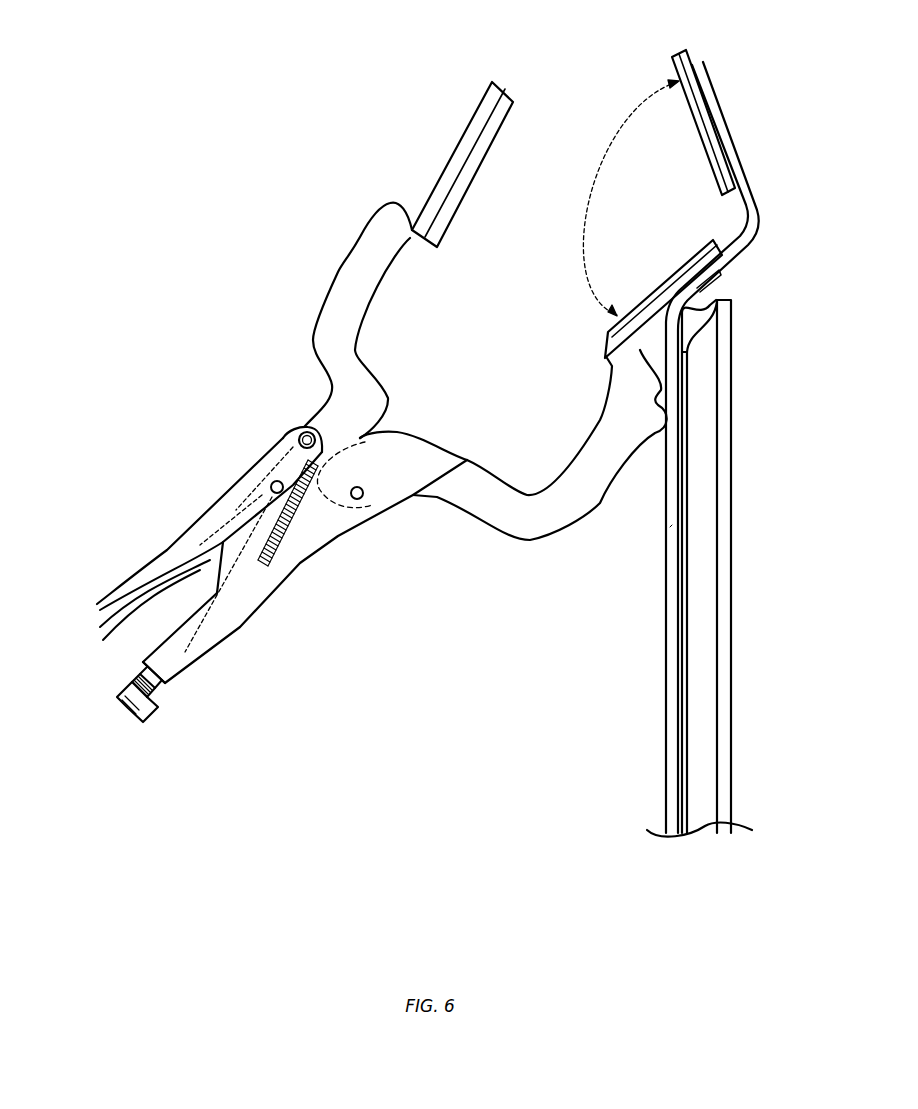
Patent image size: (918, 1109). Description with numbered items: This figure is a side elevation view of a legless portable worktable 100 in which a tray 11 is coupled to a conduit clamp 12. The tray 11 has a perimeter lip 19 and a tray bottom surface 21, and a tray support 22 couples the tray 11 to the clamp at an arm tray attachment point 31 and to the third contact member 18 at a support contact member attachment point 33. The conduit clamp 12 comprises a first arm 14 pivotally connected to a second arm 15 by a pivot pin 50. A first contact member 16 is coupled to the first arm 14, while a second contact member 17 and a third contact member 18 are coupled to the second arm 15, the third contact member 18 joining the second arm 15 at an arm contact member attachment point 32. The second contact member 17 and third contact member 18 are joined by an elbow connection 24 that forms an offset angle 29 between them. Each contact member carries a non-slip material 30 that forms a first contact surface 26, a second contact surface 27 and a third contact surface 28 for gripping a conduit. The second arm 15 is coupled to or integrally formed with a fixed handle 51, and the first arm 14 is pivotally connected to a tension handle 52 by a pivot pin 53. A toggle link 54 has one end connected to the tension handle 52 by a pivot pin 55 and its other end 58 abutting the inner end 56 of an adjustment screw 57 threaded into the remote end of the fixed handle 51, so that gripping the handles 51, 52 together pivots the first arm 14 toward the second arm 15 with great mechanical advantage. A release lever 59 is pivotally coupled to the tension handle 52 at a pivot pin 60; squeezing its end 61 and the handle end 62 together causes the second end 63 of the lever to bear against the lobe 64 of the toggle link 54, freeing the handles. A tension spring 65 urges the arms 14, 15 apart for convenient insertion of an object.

The legless portable worktable 100 is at (178, 58).
The conduit clamp 12 is at (176, 212).
The first arm 14 is at (348, 289).
The second arm 15 is at (586, 489).
The first contact member 16 is at (467, 141).
The second contact member 17 is at (712, 127).
The third contact member 18 is at (644, 318).
The perimeter lip 19 is at (726, 555).
The tray bottom surface 21 is at (670, 527).
The tray support 22 is at (679, 622).
The tray 11 is at (707, 742).
The elbow connection 24 is at (747, 226).
The first contact surface 26 is at (481, 176).
The second contact surface 27 is at (702, 149).
The third contact surface 28 is at (688, 259).
The offset angle 29 is at (587, 191).
The non-slip material 30 is at (497, 110).
The arm tray attachment point 31 is at (659, 435).
The arm contact member attachment point 32 is at (613, 370).
The support contact member attachment point 33 is at (688, 297).
The pivot pin 50 is at (361, 501).
The fixed handle 51 is at (310, 548).
The tension handle 52 is at (170, 549).
The pivot pin 53 is at (304, 429).
The toggle link 54 is at (244, 602).
The pivot pin 55 is at (276, 478).
The inner end of adjustment screw 56 is at (181, 661).
The adjustment screw 57 is at (128, 722).
The end of toggle link 58 is at (197, 647).
The release lever 59 is at (180, 579).
The pivot pin 60 is at (190, 541).
The end of release lever 61 is at (99, 641).
The end of tension handle 62 is at (92, 627).
The second end of release lever 63 is at (207, 538).
The lobe of toggle link 64 is at (235, 510).
The tension spring 65 is at (282, 571).